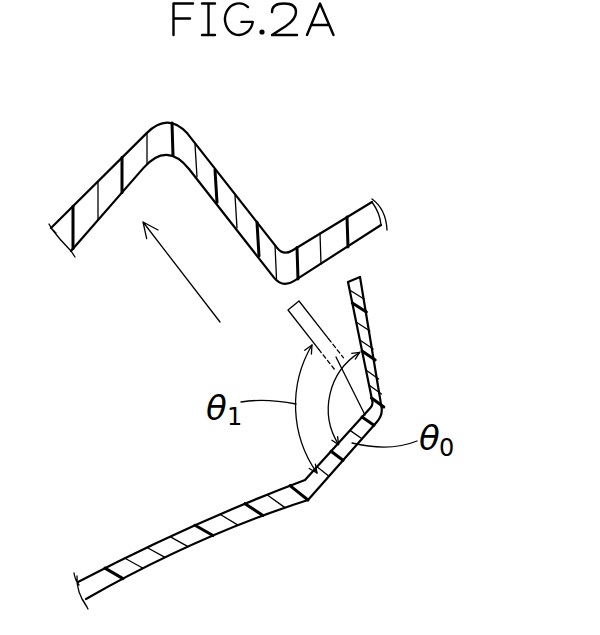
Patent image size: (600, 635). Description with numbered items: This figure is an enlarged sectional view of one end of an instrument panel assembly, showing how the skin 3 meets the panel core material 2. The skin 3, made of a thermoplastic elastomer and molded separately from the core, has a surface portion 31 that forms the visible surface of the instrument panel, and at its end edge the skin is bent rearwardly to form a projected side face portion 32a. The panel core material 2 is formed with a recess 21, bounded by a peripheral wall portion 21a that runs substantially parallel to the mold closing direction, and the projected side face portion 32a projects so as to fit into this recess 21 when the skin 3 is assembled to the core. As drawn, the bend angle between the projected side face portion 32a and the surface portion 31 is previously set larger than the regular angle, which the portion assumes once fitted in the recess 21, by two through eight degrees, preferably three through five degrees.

The panel core material 2 is at (204, 191).
The recess 21 is at (104, 217).
The peripheral wall portion 21a is at (220, 201).
The skin 3 is at (274, 443).
The surface portion 31 is at (147, 548).
The projected side face portion 32a is at (370, 326).